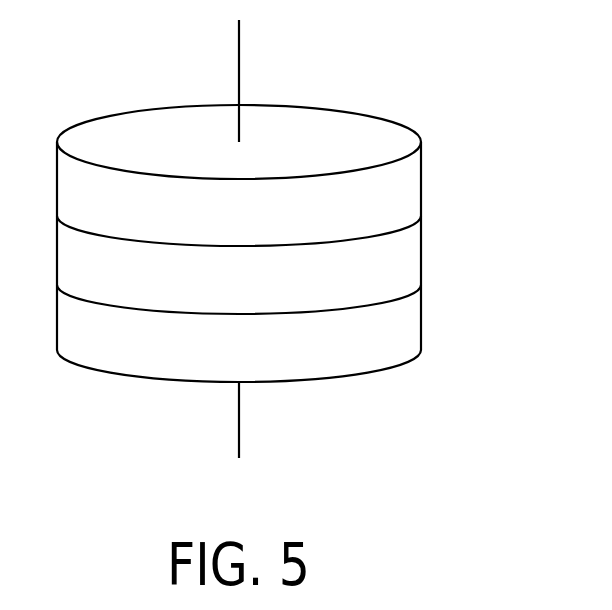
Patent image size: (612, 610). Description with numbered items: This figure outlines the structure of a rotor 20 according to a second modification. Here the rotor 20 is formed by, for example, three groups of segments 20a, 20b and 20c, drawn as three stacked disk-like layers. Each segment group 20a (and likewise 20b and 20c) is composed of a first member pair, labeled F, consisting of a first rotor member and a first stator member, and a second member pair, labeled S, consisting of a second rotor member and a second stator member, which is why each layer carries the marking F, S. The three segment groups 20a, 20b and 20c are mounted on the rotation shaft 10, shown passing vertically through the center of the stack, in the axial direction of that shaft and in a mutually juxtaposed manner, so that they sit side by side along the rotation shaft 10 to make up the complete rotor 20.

The rotation shaft 10 is at (239, 50).
The rotor 20 is at (141, 88).
The segment group 20a is at (409, 182).
The segment group 20b is at (409, 253).
The segment group 20c is at (409, 322).